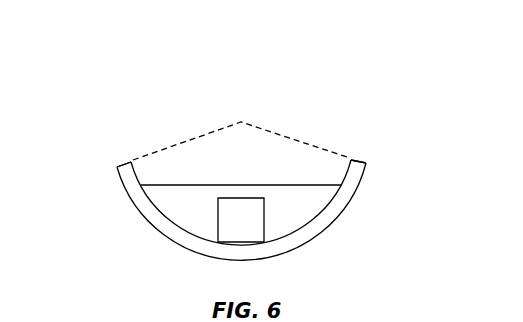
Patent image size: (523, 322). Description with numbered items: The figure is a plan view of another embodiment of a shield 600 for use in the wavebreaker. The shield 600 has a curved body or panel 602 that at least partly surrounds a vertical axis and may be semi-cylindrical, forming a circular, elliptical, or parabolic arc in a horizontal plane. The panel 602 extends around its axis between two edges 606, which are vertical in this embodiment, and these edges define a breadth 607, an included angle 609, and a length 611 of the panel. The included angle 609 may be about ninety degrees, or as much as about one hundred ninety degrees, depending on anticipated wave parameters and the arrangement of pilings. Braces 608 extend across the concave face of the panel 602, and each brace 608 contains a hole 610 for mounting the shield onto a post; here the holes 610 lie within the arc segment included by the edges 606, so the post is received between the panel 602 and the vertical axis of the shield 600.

The shield 600 is at (131, 71).
The curved body or panel 602 is at (168, 238).
The edges 606 is at (119, 163).
The breadth 607 is at (363, 150).
The braces 608 is at (306, 220).
The included angle 609 is at (208, 130).
The hole 610 is at (260, 232).
The length 611 is at (270, 259).